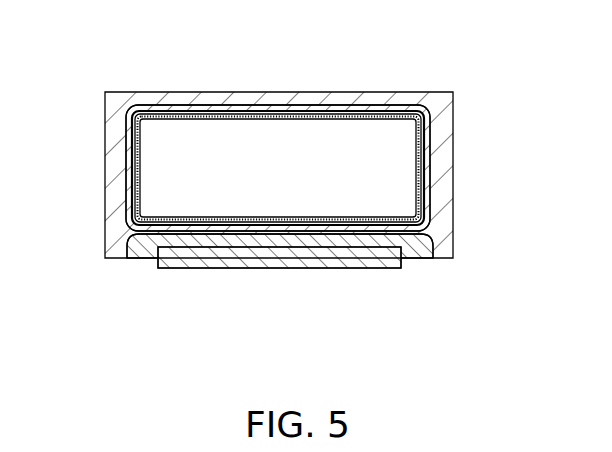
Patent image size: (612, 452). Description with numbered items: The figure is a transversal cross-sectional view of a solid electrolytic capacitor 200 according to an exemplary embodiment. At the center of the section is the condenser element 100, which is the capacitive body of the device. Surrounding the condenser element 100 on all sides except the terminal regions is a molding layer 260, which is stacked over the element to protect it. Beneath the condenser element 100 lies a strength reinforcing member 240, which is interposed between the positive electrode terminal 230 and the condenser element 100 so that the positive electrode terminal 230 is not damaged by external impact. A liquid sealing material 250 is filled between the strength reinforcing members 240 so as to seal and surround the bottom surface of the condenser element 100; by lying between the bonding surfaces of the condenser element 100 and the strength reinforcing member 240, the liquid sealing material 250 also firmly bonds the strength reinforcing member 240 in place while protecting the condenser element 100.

The solid electrolytic capacitor 200 is at (63, 34).
The molding layer 260 is at (445, 134).
The condenser element 100 is at (416, 183).
The strength reinforcing member 240 is at (232, 252).
The positive electrode terminal 230 is at (303, 268).
The liquid sealing material 250 is at (434, 258).